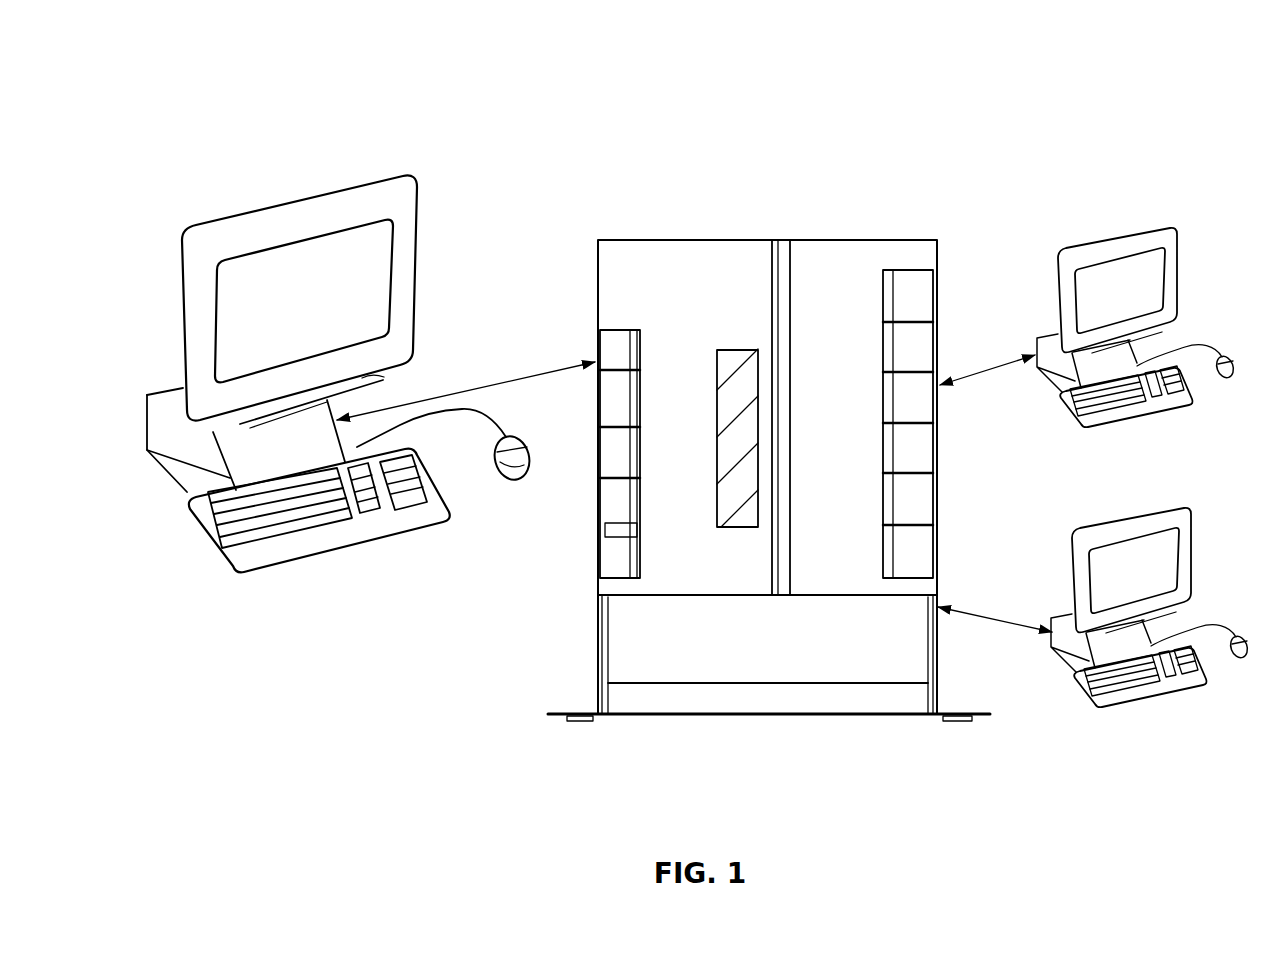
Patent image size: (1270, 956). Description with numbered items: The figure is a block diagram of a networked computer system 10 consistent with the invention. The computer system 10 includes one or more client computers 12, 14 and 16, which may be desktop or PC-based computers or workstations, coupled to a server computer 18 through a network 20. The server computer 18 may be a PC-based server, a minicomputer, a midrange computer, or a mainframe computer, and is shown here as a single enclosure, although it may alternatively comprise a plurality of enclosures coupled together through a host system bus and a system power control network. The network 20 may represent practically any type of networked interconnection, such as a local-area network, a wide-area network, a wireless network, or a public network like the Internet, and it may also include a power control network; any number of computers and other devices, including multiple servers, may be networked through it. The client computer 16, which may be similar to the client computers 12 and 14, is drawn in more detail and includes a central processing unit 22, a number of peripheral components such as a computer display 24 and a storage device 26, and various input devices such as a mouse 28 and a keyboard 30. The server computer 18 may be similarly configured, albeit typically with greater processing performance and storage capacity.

The computer system 10 is at (823, 106).
The client computer 12 is at (1063, 612).
The client computer 14 is at (1053, 330).
The client computer 16 is at (157, 392).
The server computer 18 is at (727, 238).
The network 20 is at (497, 383).
The central processing unit 22 is at (167, 462).
The computer display 24 is at (374, 256).
The storage device 26 is at (352, 393).
The mouse 28 is at (498, 492).
The keyboard 30 is at (213, 540).